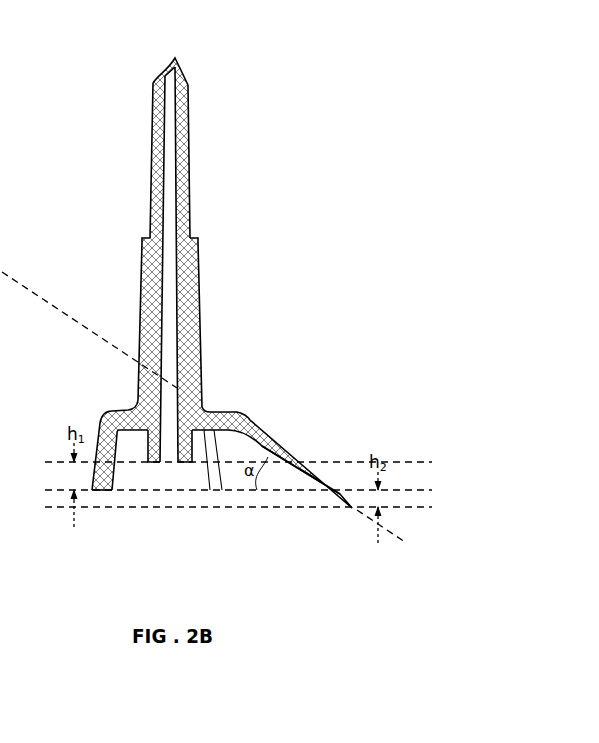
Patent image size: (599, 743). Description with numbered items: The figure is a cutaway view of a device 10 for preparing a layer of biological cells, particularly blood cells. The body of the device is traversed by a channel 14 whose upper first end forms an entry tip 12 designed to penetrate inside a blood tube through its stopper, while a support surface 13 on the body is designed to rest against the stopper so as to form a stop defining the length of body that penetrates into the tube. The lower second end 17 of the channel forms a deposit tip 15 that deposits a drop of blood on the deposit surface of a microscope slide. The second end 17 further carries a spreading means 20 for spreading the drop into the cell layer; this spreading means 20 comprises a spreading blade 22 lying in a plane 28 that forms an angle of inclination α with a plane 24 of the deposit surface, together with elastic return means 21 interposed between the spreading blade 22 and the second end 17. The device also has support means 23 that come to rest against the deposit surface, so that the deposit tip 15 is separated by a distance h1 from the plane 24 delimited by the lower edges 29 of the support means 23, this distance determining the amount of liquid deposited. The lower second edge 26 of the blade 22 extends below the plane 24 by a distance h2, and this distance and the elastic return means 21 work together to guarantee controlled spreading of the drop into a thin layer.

The device 10 is at (222, 275).
The entry tip 12 is at (163, 78).
The support surface 13 is at (197, 240).
The channel 14 is at (170, 148).
The deposit tip 15 is at (172, 465).
The second end 17 is at (127, 402).
The spreading means 20 is at (268, 397).
The elastic return means 21 is at (213, 428).
The spreading blade 22 is at (300, 447).
The support means 23 is at (102, 415).
The plane 24 is at (292, 490).
The lower second edge 26 is at (352, 508).
The plane 28 is at (392, 530).
The lower edges 29 is at (100, 493).